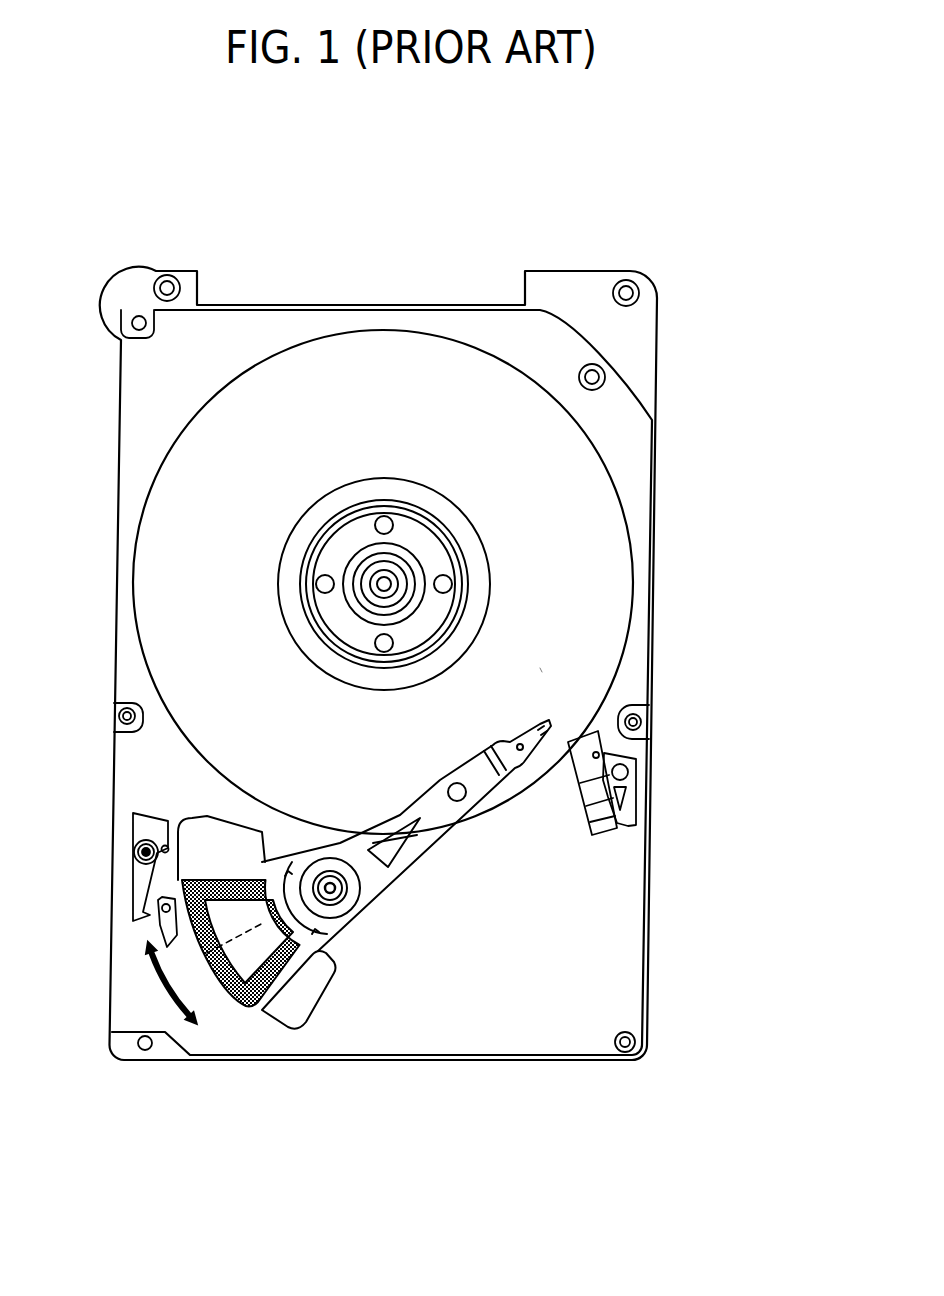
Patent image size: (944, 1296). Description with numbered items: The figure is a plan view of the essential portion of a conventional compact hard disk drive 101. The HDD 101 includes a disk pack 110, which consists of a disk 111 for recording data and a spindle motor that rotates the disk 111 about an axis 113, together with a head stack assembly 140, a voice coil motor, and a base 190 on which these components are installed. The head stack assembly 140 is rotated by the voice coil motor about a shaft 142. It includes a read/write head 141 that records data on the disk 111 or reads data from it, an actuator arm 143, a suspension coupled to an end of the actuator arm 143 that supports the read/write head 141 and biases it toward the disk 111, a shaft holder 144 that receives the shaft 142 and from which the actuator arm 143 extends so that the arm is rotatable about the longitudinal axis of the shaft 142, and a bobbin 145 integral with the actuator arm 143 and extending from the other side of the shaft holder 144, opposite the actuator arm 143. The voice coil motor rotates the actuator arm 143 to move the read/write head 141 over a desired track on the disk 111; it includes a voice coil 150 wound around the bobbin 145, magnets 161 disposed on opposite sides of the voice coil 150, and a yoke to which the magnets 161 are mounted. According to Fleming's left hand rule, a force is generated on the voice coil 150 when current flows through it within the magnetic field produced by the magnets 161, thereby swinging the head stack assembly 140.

The hard disk drive 101 is at (87, 240).
The disk pack 110 is at (538, 517).
The disk 111 is at (541, 670).
The axis 113 is at (388, 584).
The head stack assembly 140 is at (407, 896).
The read/write head 141 is at (568, 720).
The shaft 142 is at (338, 893).
The actuator arm 143 is at (437, 838).
The shaft holder 144 is at (318, 955).
The bobbin 145 is at (245, 1010).
The voice coil 150 is at (219, 1008).
The magnets 161 is at (192, 824).
The base 190 is at (660, 966).